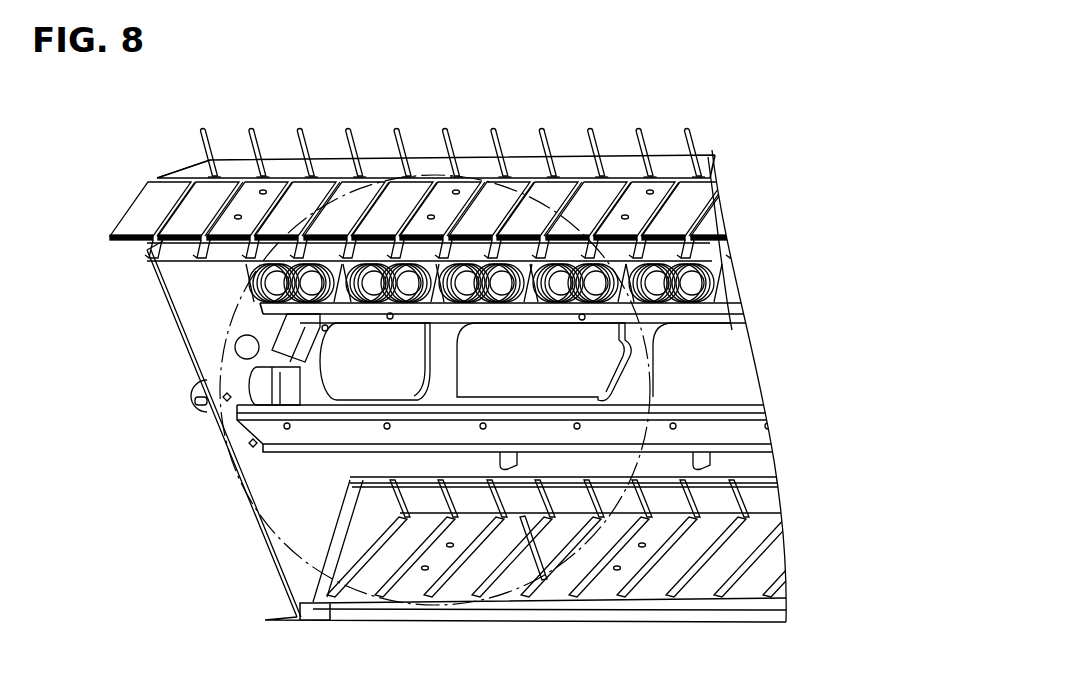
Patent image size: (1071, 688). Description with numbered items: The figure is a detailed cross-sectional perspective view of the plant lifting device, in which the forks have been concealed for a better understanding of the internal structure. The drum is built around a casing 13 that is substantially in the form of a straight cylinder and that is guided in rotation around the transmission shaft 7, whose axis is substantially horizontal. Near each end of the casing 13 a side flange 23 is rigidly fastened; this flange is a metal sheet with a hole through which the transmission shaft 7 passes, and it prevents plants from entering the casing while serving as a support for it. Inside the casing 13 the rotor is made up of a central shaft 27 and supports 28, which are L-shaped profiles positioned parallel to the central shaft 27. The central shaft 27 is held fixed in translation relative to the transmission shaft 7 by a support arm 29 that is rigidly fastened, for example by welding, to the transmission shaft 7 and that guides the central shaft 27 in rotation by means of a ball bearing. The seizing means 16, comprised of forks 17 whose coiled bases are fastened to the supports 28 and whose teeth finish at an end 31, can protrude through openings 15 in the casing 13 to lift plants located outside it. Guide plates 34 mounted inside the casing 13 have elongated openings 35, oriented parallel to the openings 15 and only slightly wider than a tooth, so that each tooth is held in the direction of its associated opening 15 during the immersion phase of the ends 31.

The transmission shaft 7 is at (270, 378).
The casing 13 is at (148, 210).
The openings 15 is at (260, 220).
The seizing means 16 is at (728, 152).
The forks 17 is at (640, 150).
The side flange 23 is at (323, 542).
The central shaft 27 is at (556, 378).
The supports 28 is at (717, 303).
The support arm 29 is at (290, 345).
The end 31 is at (395, 135).
The guide plates 34 is at (745, 593).
The elongated openings 35 is at (482, 586).